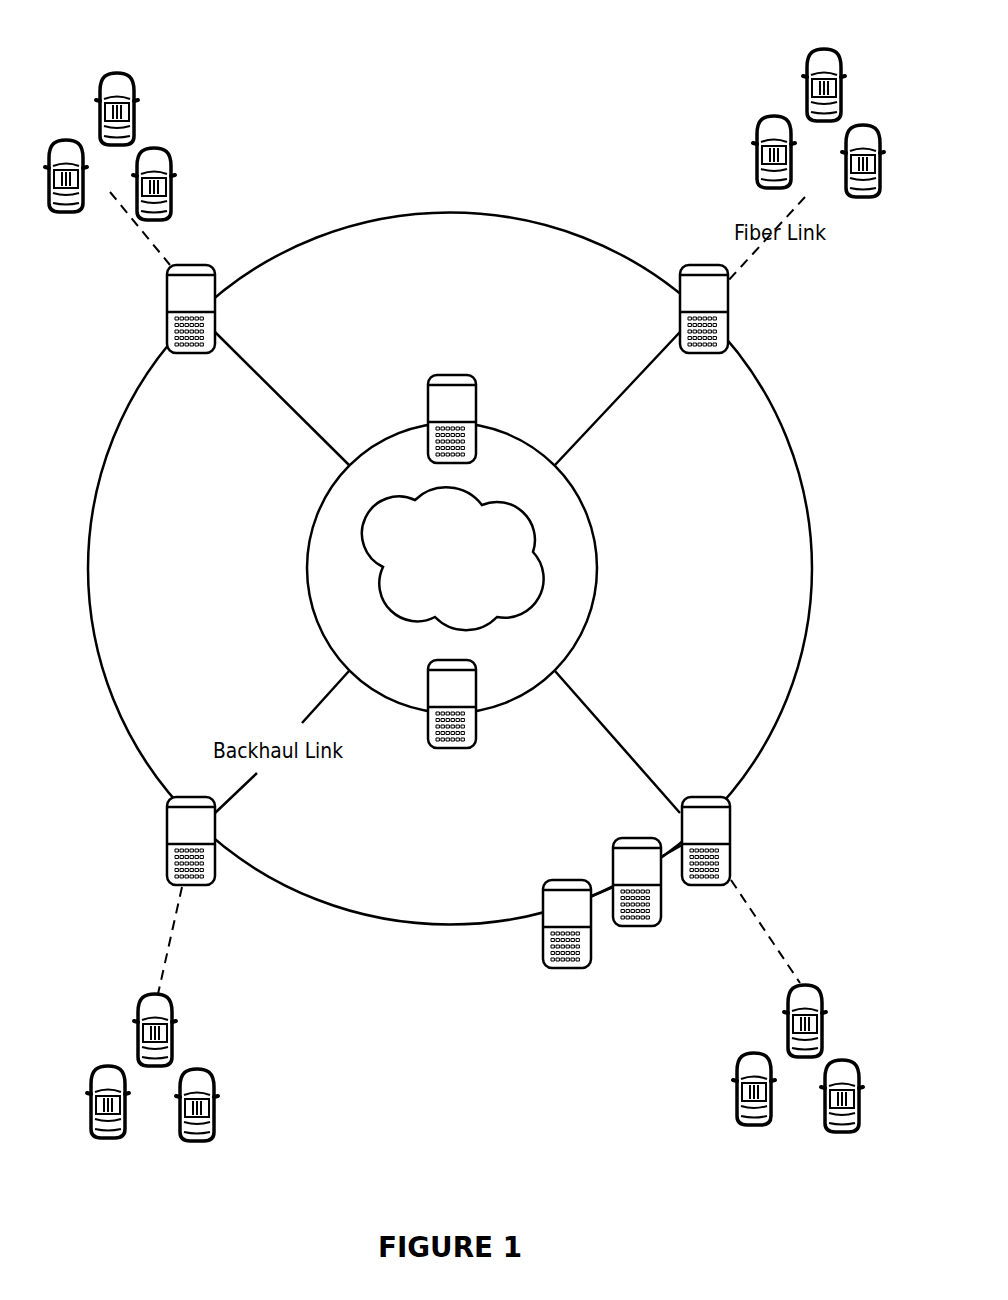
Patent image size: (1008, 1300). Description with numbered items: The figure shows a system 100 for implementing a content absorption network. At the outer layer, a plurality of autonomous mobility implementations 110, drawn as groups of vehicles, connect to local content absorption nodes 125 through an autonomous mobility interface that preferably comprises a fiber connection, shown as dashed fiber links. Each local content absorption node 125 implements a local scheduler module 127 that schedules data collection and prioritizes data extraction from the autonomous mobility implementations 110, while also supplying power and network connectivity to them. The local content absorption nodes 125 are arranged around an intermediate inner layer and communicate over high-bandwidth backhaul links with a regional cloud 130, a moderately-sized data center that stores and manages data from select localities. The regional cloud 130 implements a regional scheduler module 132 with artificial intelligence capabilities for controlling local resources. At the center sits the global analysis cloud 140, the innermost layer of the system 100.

The system 100 is at (644, 30).
The autonomous mobility implementations 110 is at (464, 618).
The local content absorption node 125 is at (459, 575).
The local scheduler module 127 is at (448, 575).
The regional cloud 130 is at (452, 555).
The regional scheduler module 132 is at (452, 561).
The global analysis cloud 140 is at (453, 558).